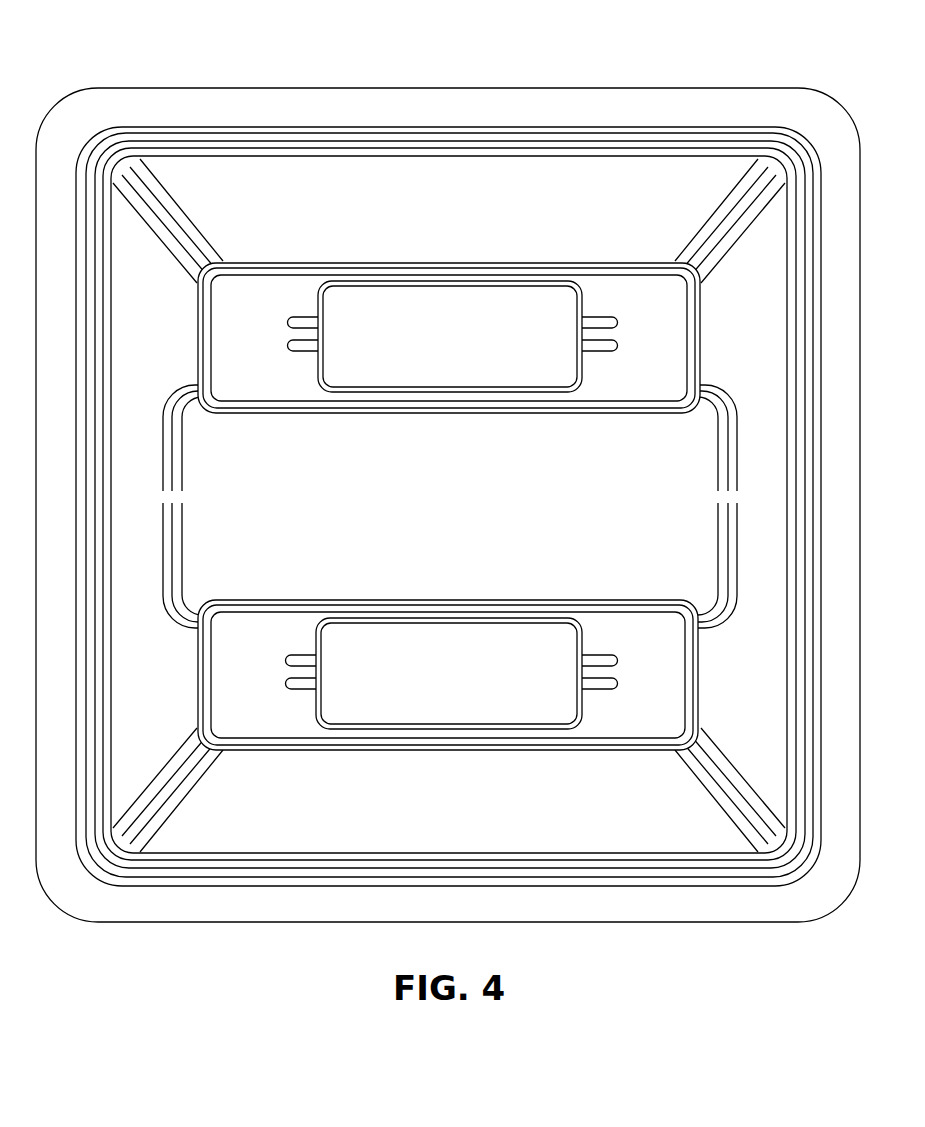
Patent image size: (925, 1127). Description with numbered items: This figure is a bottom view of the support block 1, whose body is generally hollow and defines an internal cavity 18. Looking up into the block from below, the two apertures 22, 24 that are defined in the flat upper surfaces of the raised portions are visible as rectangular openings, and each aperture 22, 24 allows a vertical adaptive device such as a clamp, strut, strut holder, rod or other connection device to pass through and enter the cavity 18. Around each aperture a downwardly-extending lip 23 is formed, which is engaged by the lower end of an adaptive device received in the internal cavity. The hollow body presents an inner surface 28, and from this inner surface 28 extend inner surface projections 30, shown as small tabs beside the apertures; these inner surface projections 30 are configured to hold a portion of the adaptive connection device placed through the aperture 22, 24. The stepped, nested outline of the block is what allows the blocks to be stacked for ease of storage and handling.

The device 1 is at (448, 492).
The cavity 18 is at (242, 828).
The aperture 22 is at (415, 320).
The downwardly-extending lip 23 is at (460, 282).
The aperture 24 is at (412, 685).
The inner surface 28 is at (462, 541).
The inner surface projections 30 is at (288, 322).